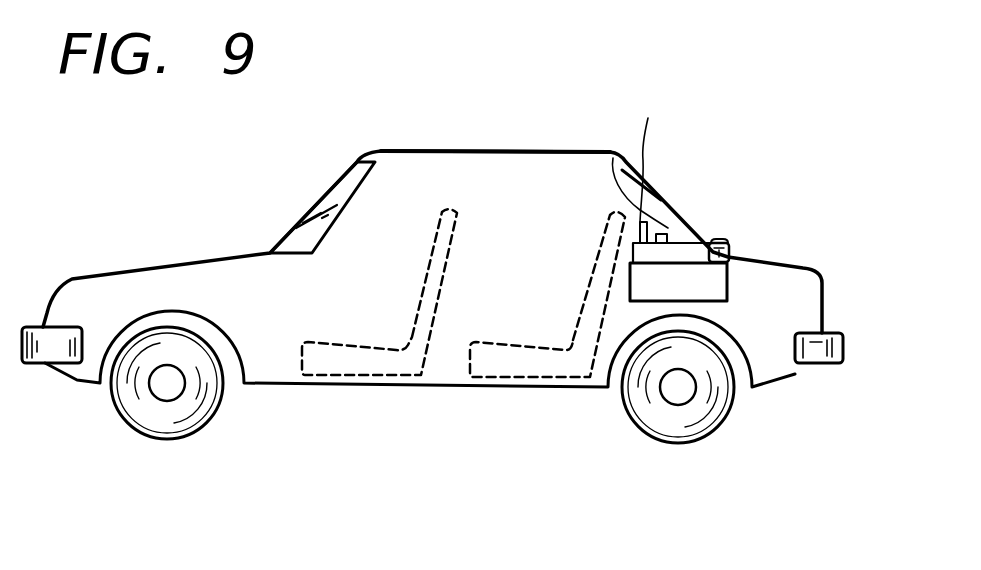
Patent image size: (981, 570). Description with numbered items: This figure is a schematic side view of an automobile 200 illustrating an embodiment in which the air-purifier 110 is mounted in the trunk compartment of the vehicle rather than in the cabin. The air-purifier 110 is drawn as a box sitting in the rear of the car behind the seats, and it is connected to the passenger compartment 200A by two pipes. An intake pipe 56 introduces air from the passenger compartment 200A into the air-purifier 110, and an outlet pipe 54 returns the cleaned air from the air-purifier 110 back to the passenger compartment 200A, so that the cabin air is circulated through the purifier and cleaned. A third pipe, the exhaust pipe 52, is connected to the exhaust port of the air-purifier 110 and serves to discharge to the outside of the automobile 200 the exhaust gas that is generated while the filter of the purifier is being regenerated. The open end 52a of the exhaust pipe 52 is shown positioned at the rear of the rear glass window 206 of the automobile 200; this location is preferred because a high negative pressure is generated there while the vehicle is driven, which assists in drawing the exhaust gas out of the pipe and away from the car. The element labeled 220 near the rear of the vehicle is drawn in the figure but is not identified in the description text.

The automobile 200 is at (407, 148).
The passenger compartment 200A is at (462, 157).
The intake pipe 56 is at (613, 153).
The outlet pipe 54 is at (676, 174).
The rear glass window 206 is at (672, 210).
The exhaust pipe 52 is at (729, 258).
The open end 52a is at (717, 240).
The air-purifier 110 is at (727, 288).
The rear bumper 220 is at (773, 348).